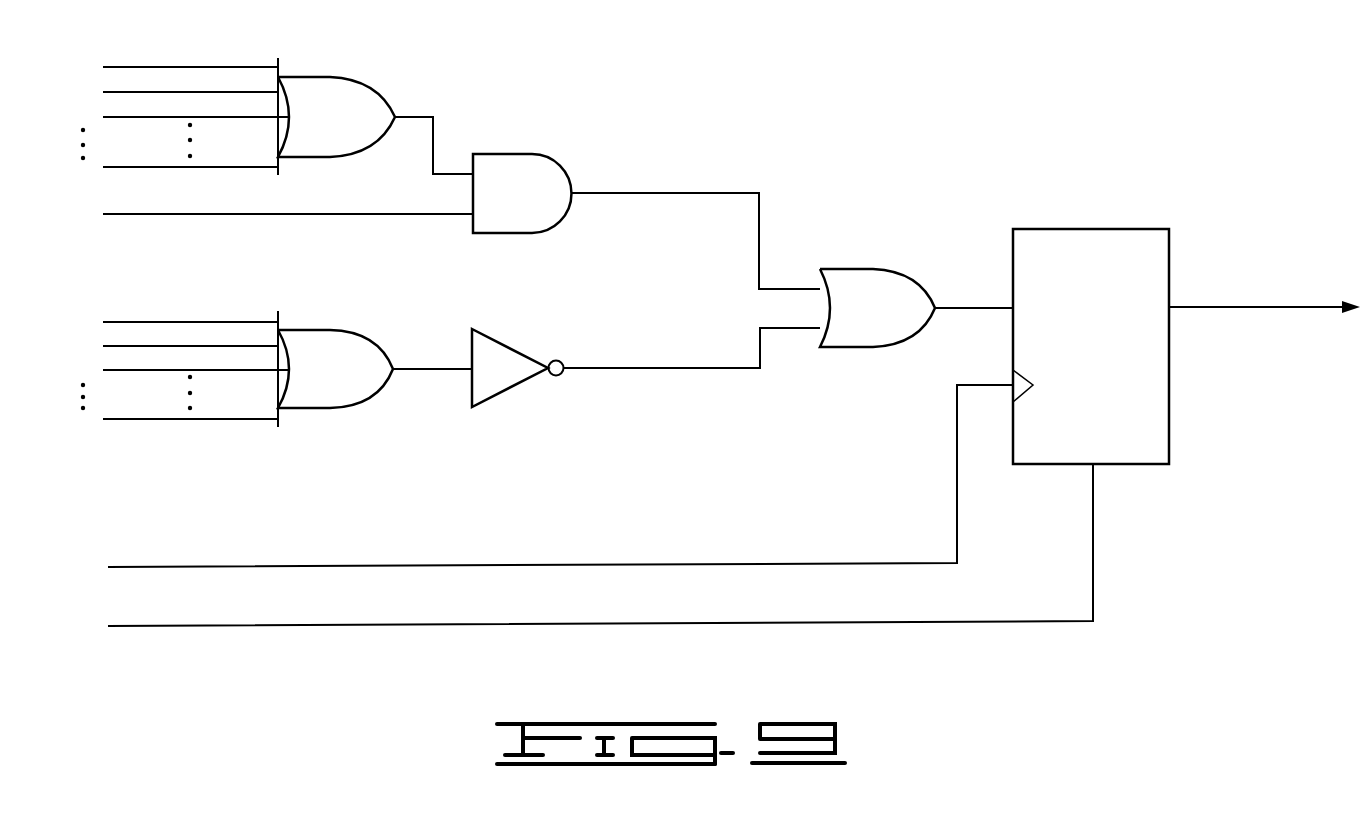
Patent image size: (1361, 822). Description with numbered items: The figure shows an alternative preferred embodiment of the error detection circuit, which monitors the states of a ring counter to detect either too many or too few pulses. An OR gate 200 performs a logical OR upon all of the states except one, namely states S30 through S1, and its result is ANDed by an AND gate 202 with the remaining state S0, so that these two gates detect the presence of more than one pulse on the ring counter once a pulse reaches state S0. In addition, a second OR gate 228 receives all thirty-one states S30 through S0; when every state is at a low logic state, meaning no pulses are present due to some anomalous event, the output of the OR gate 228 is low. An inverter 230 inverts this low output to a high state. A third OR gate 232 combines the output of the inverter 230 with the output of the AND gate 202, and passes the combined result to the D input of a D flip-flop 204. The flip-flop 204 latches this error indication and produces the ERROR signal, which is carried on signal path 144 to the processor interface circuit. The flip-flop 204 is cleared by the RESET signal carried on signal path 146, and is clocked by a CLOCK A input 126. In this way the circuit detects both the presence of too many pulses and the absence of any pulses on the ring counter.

The OR gate 200 is at (347, 77).
The AND gate 202 is at (512, 154).
The OR gate 228 is at (347, 330).
The inverter 230 is at (493, 335).
The OR gate 232 is at (877, 268).
The D flip-flop 204 is at (1172, 403).
The signal path 144 is at (1213, 307).
The CLOCK A signal line 126 is at (302, 566).
The signal path 146 is at (308, 626).